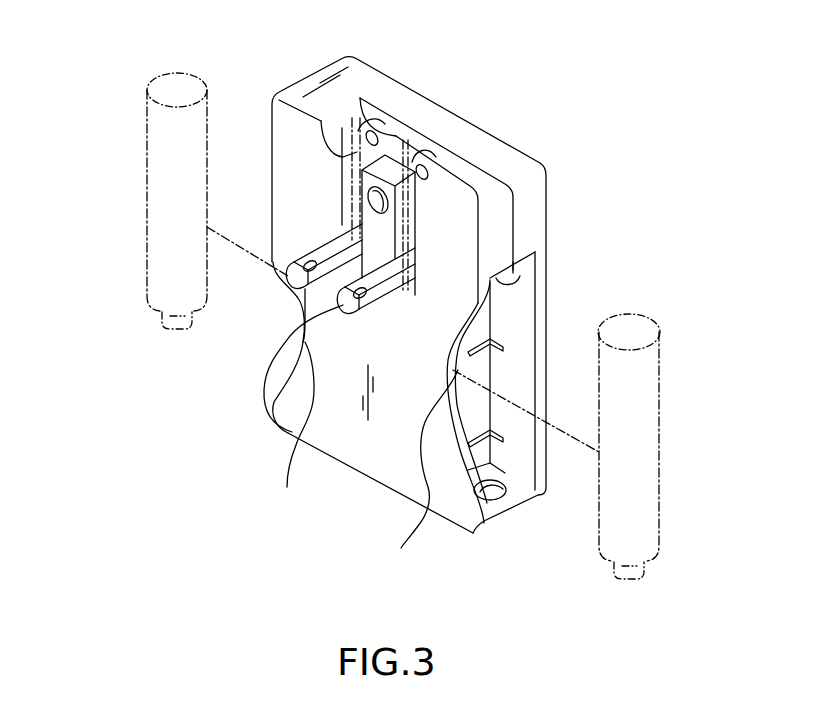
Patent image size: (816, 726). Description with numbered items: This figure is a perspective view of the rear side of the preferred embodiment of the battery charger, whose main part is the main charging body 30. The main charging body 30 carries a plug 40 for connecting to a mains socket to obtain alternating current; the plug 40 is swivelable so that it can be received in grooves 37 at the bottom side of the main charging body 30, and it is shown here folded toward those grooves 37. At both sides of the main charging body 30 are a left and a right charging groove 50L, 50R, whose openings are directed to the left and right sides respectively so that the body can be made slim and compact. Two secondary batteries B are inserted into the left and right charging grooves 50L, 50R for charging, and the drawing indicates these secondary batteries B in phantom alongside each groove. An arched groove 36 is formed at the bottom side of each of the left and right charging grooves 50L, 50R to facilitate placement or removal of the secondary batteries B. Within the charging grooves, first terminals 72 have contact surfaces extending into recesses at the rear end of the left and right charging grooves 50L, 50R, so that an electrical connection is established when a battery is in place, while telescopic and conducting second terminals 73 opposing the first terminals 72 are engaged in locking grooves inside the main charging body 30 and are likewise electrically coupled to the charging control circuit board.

The main charging body 30 is at (402, 306).
The arched groove 36 is at (377, 415).
The grooves 37 is at (428, 168).
The plug 40 is at (288, 276).
The right charging groove 50R is at (259, 178).
The left charging groove 50L is at (518, 322).
The first terminals 72 is at (494, 491).
The second terminals 73 is at (505, 276).
The secondary batteries B is at (150, 196).